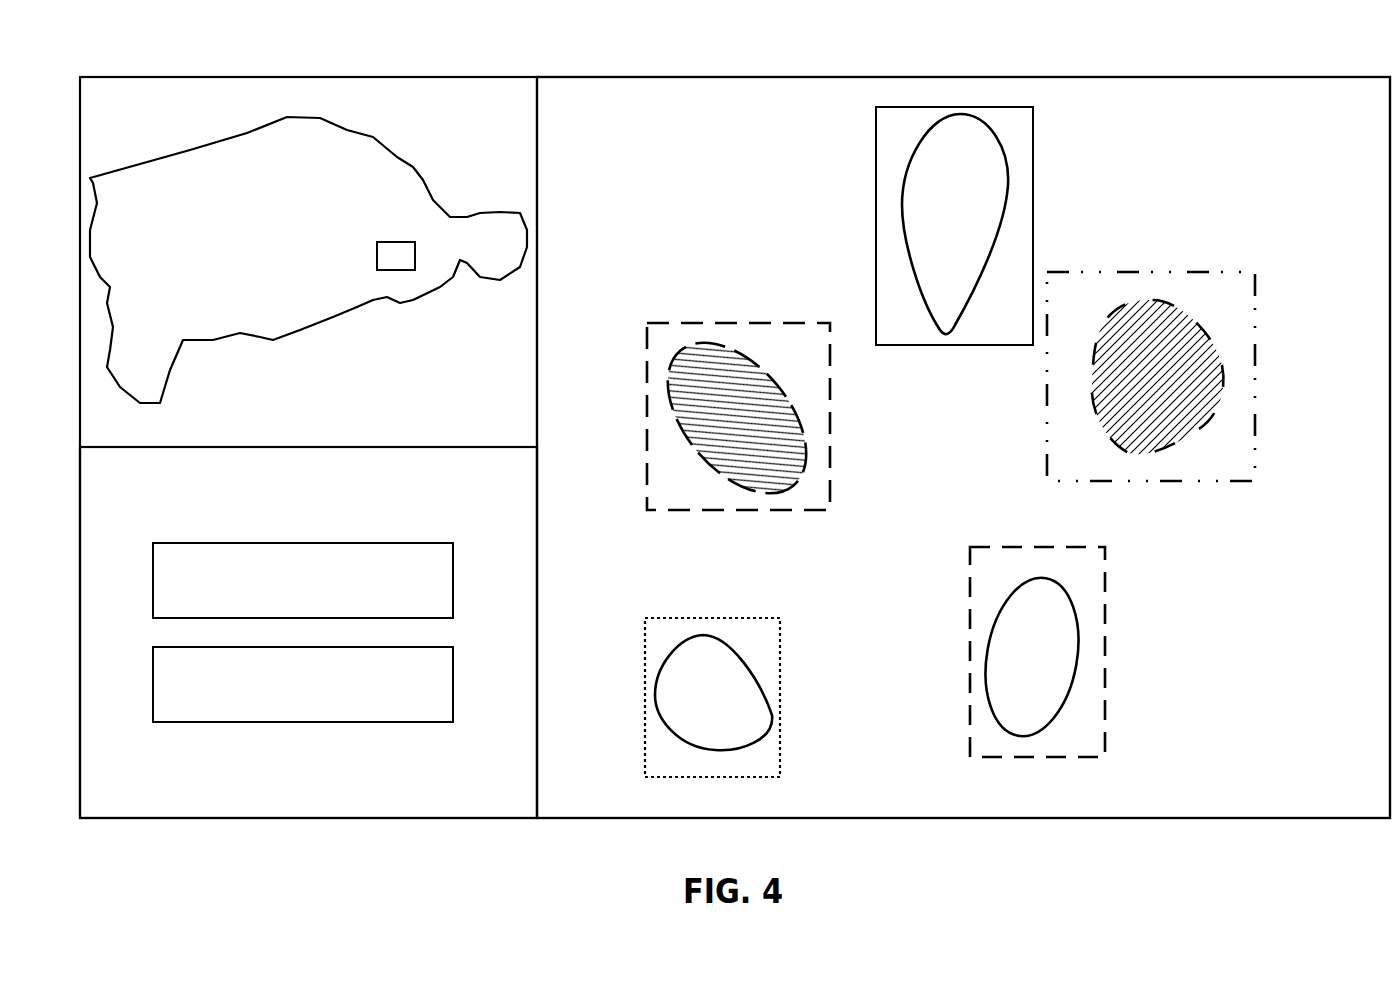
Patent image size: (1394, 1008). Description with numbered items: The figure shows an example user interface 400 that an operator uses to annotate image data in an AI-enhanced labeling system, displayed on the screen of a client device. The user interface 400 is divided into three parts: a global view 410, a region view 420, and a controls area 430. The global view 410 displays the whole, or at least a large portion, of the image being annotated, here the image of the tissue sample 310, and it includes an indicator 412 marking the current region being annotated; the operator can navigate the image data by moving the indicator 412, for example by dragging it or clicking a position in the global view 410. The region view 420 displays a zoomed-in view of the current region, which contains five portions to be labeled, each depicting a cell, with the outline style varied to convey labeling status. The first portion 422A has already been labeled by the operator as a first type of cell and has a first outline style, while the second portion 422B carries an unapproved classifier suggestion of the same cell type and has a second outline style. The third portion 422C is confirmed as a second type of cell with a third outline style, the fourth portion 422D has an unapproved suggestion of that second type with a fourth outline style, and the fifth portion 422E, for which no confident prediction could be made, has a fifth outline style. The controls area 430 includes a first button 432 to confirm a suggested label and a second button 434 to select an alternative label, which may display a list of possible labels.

The user interface 400 is at (1297, 77).
The global view 410 is at (137, 118).
The tissue sample 310 is at (320, 285).
The indicator 412 is at (393, 257).
The region view 420 is at (603, 118).
The first portion 422A is at (927, 105).
The second portion 422B is at (1020, 545).
The third portion 422C is at (715, 323).
The fourth portion 422D is at (1187, 269).
The fifth portion 422E is at (670, 617).
The controls area 430 is at (137, 493).
The first button 432 is at (252, 542).
The second button 434 is at (302, 722).